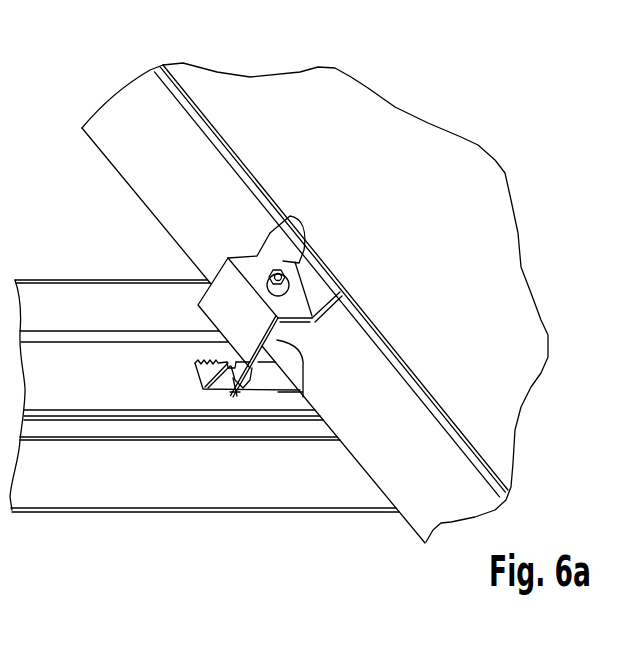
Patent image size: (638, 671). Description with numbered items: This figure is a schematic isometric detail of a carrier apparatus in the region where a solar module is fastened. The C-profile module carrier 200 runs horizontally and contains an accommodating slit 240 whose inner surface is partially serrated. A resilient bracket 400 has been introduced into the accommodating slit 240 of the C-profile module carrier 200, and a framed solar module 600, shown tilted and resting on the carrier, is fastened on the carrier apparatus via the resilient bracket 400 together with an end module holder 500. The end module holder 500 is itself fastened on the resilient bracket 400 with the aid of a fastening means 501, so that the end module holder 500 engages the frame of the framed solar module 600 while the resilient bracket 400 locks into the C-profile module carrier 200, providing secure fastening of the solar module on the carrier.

The C-profile module carrier 200 is at (100, 487).
The accommodating slit 240 is at (200, 373).
The resilient bracket 400 is at (233, 377).
The end module holder 500 is at (302, 347).
The fastening means 501 is at (307, 247).
The framed solar module 600 is at (405, 122).